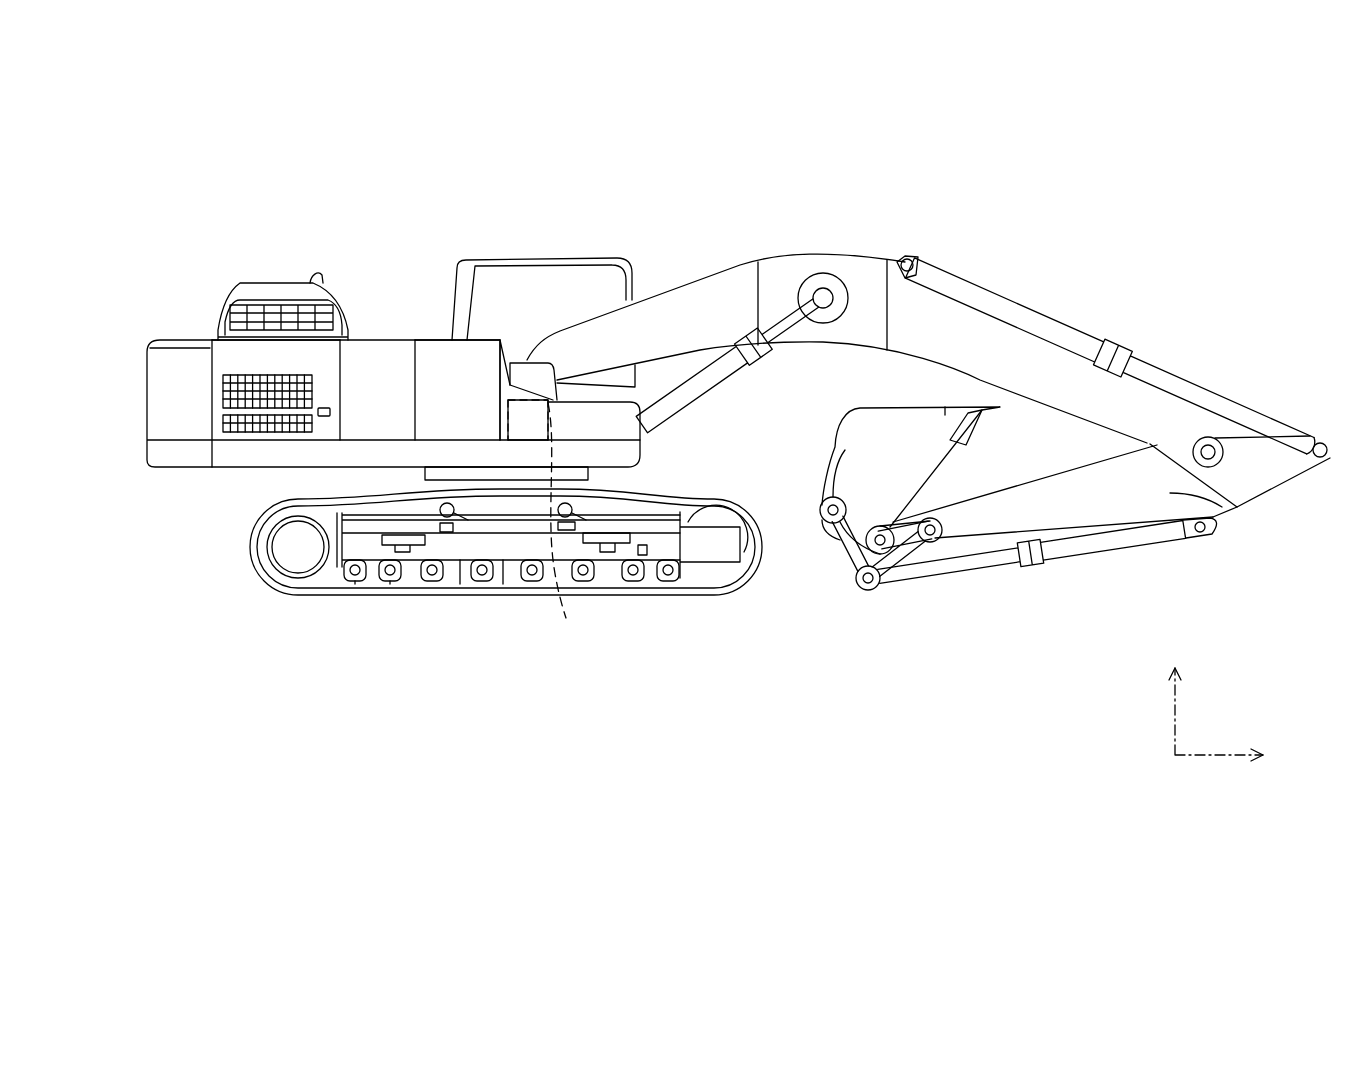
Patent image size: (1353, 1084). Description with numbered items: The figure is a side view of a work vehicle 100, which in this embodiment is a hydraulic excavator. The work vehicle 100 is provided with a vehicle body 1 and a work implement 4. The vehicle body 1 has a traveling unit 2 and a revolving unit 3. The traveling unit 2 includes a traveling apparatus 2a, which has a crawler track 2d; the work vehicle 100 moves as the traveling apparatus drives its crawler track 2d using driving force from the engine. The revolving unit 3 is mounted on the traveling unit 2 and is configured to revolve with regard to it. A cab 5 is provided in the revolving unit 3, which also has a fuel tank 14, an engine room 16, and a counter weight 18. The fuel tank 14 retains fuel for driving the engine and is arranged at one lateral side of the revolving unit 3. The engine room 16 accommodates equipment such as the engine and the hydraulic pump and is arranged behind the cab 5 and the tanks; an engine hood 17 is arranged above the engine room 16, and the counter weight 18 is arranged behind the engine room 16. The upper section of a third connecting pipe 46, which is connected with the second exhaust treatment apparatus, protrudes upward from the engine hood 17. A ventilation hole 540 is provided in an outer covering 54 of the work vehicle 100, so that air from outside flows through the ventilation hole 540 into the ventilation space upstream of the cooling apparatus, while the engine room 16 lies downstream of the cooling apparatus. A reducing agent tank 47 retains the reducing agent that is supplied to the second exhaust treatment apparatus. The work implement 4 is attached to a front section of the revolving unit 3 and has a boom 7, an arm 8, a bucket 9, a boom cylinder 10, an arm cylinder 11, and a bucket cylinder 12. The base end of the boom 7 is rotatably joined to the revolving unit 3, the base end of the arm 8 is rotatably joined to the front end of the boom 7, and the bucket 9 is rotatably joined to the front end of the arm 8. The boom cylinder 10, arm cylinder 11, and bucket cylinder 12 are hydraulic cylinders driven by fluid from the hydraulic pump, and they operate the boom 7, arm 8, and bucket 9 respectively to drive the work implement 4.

The work vehicle 100 is at (703, 190).
The vehicle body 1 is at (499, 181).
The traveling unit 2 is at (424, 610).
The traveling apparatus 2a is at (281, 555).
The crawler track 2d is at (720, 490).
The revolving unit 3 is at (393, 216).
The work implement 4 is at (1115, 313).
The cab 5 is at (604, 255).
The boom 7 is at (724, 287).
The arm 8 is at (1175, 493).
The bucket 9 is at (862, 443).
The boom cylinder 10 is at (750, 363).
The arm cylinder 11 is at (1015, 312).
The bucket cylinder 12 is at (1077, 555).
The fuel tank 14 is at (450, 375).
The engine room 16 is at (280, 354).
The engine hood 17 is at (230, 348).
The counter weight 18 is at (163, 367).
The third connecting pipe 46 is at (313, 273).
The reducing agent tank 47 is at (552, 590).
The outer covering 54 is at (232, 320).
The ventilation hole 540 is at (225, 398).